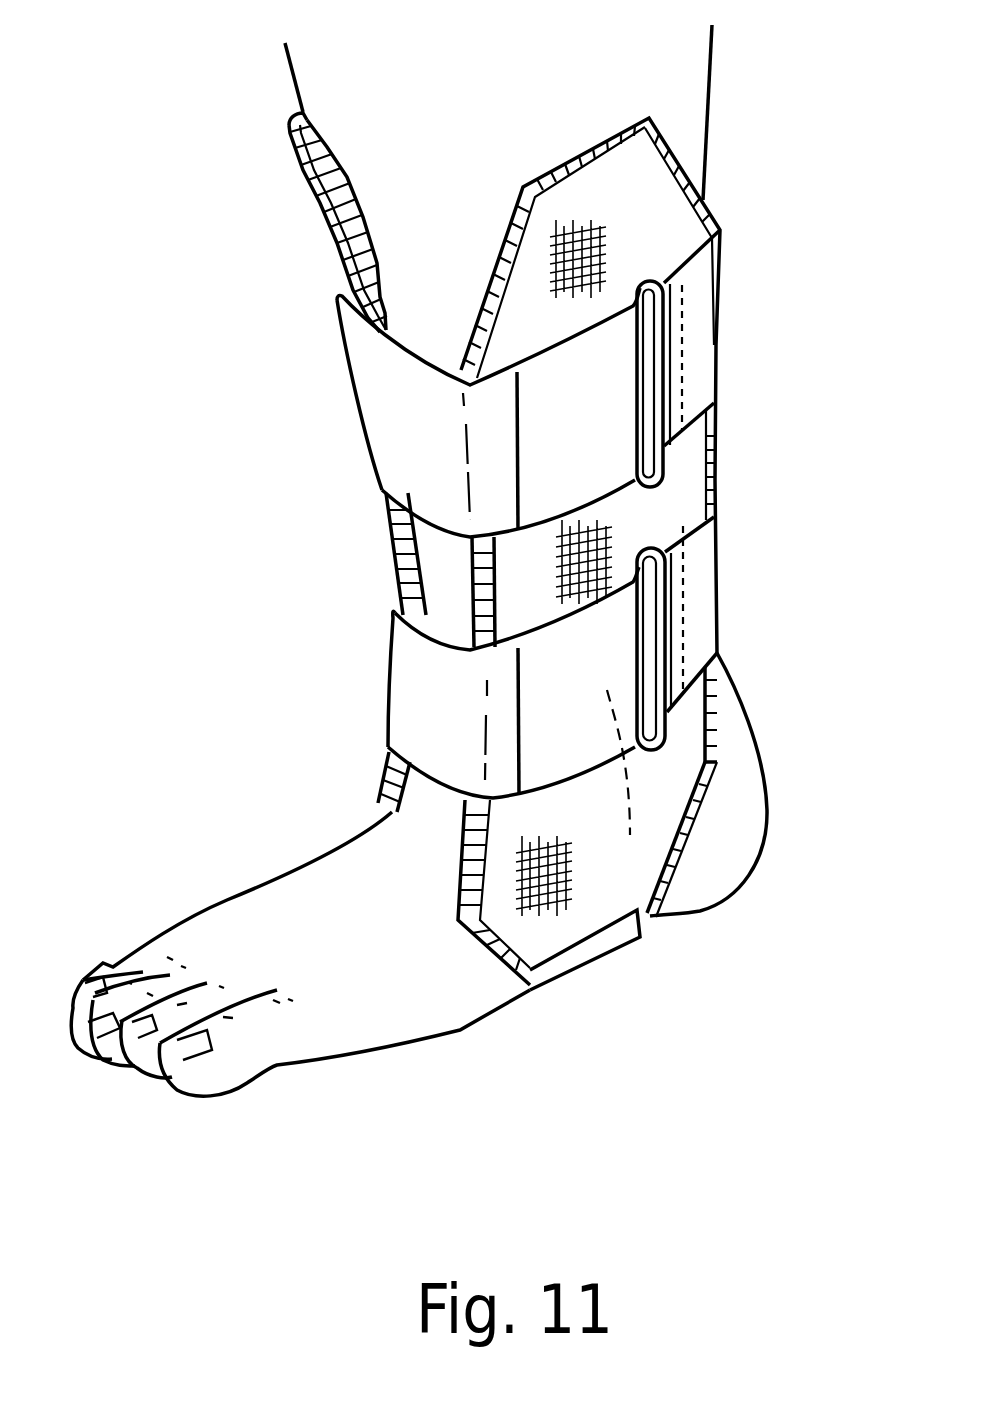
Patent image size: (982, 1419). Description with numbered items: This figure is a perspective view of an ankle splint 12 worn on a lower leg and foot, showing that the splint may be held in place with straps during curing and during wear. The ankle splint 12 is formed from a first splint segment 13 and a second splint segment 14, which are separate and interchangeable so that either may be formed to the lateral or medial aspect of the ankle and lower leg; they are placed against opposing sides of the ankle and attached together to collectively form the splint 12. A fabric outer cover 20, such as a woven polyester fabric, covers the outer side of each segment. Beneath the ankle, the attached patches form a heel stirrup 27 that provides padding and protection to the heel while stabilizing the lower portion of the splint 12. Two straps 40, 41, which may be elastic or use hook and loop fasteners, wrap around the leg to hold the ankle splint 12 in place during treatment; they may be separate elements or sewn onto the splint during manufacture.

The ankle splint 12 is at (280, 697).
The first splint segment 13 is at (682, 485).
The second splint segment 14 is at (390, 545).
The fabric outer cover 20 is at (647, 187).
The heel stirrup 27 is at (590, 950).
The strap 40 is at (702, 330).
The strap 41 is at (695, 582).